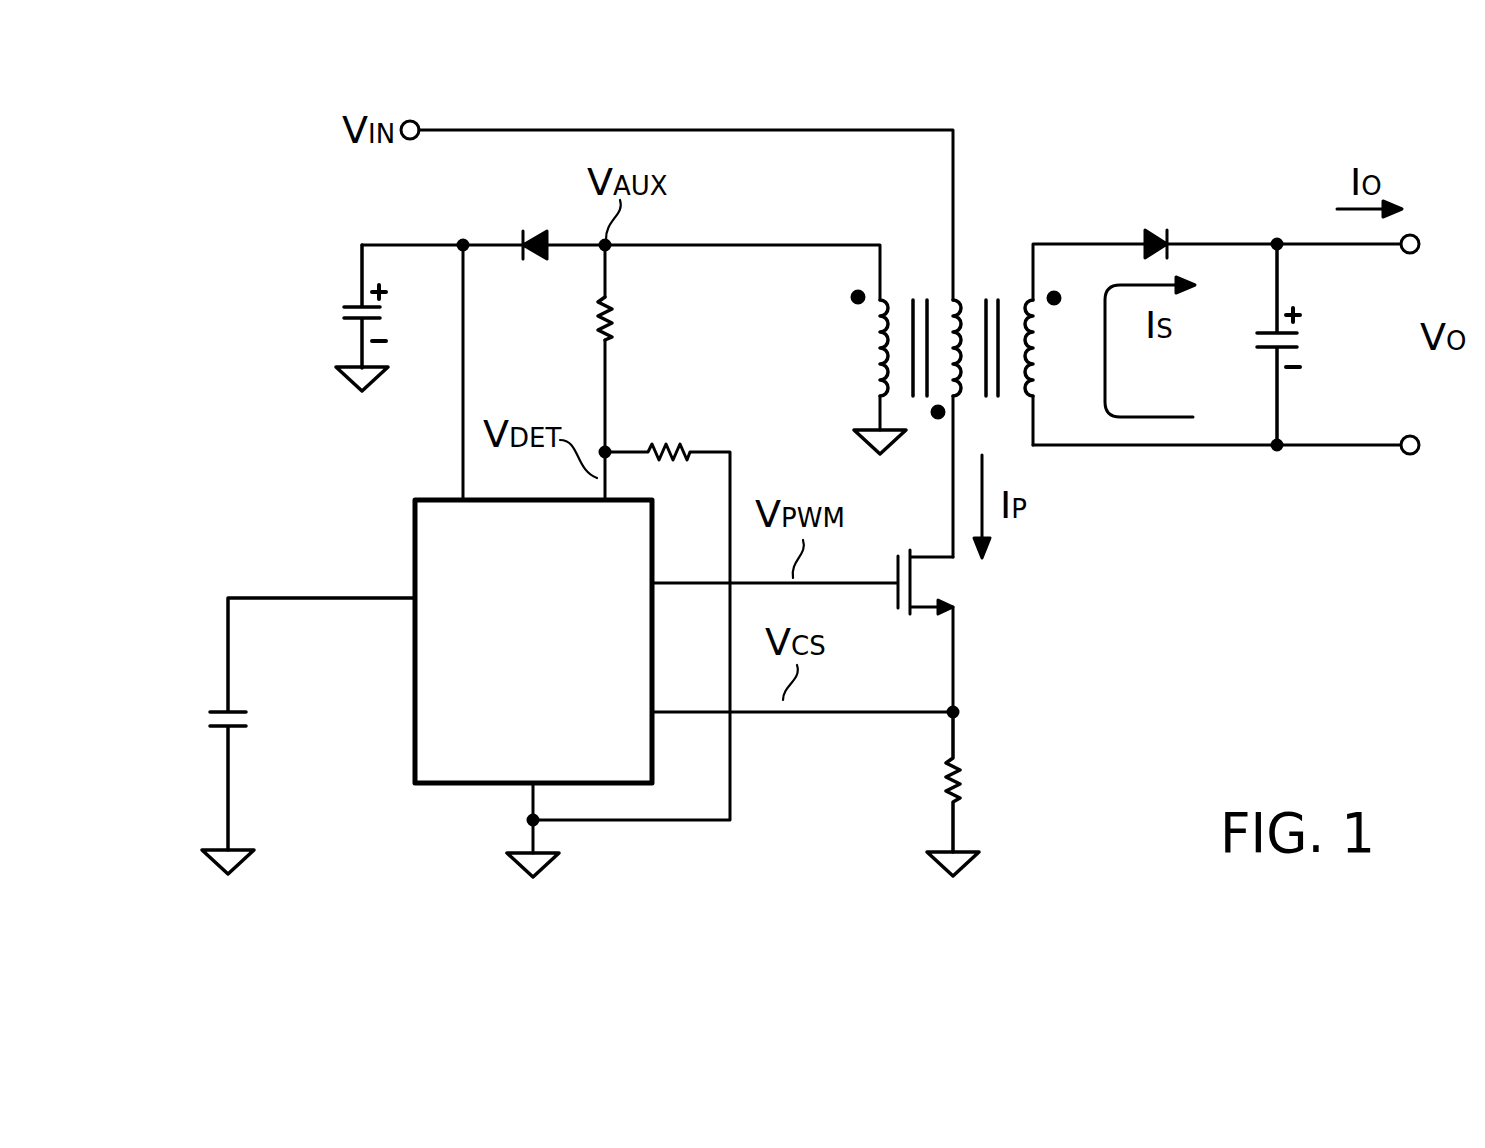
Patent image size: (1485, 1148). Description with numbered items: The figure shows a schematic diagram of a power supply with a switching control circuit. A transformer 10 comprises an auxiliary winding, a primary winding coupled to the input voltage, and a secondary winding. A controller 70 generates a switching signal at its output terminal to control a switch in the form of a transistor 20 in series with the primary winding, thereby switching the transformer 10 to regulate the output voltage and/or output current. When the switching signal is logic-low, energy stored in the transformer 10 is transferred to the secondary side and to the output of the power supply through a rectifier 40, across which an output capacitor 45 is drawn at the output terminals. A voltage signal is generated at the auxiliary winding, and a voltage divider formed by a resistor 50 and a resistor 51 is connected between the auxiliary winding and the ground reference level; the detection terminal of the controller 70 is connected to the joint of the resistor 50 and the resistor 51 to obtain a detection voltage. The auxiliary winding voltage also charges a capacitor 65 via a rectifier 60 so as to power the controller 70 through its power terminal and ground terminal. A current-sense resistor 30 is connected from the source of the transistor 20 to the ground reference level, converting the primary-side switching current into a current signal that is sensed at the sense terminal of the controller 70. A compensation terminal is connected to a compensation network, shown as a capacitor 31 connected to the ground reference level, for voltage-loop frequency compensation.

The transformer 10 is at (985, 260).
The transistor 20 is at (957, 590).
The current-sense resistor 30 is at (935, 780).
The capacitor 31 is at (200, 718).
The rectifier 40 is at (1155, 230).
The output capacitor 45 is at (1305, 340).
The resistor 50 is at (620, 315).
The resistor 51 is at (670, 440).
The rectifier 60 is at (537, 272).
The capacitor 65 is at (330, 312).
The controller 70 is at (405, 536).